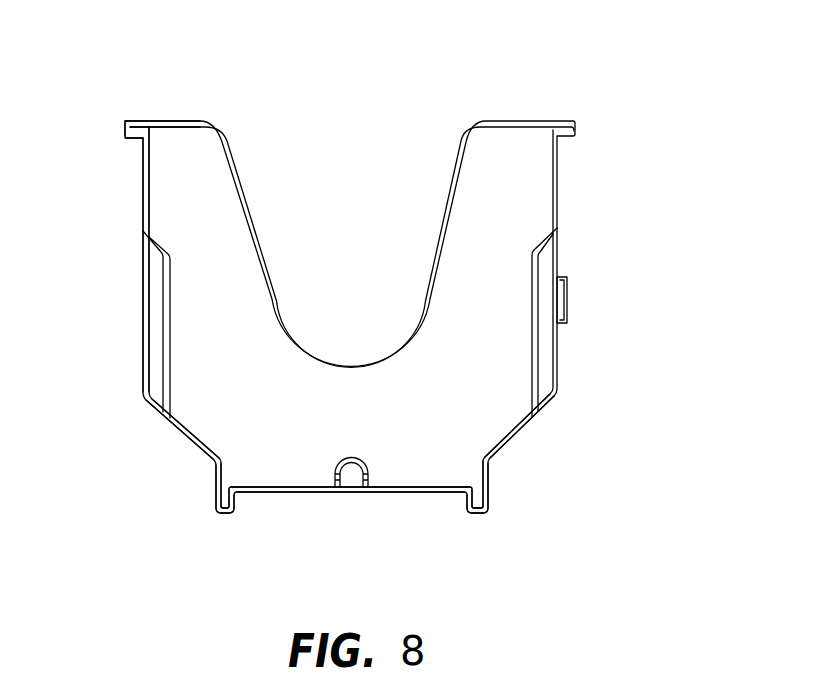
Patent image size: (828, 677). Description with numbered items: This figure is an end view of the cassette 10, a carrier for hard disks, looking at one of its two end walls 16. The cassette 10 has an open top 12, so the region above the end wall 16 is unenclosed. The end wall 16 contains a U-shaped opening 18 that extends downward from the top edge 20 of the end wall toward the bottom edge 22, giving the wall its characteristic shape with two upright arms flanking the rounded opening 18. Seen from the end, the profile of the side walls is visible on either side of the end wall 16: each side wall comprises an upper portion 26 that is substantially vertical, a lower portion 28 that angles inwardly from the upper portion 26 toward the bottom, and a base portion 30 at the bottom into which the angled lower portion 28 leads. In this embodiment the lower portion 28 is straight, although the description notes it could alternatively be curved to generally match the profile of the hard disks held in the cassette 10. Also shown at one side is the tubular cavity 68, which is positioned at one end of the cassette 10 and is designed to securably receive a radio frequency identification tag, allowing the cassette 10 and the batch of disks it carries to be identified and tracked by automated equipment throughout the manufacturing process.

The cassette 10 is at (610, 139).
The open top 12 is at (329, 118).
The end wall 16 is at (250, 403).
The U-shaped opening 18 is at (400, 262).
The top edge 20 is at (142, 120).
The bottom edge 22 is at (405, 489).
The upper portion 26 is at (142, 285).
The lower portion 28 is at (185, 440).
The base portion 30 is at (216, 497).
The tubular cavity 68 is at (565, 300).